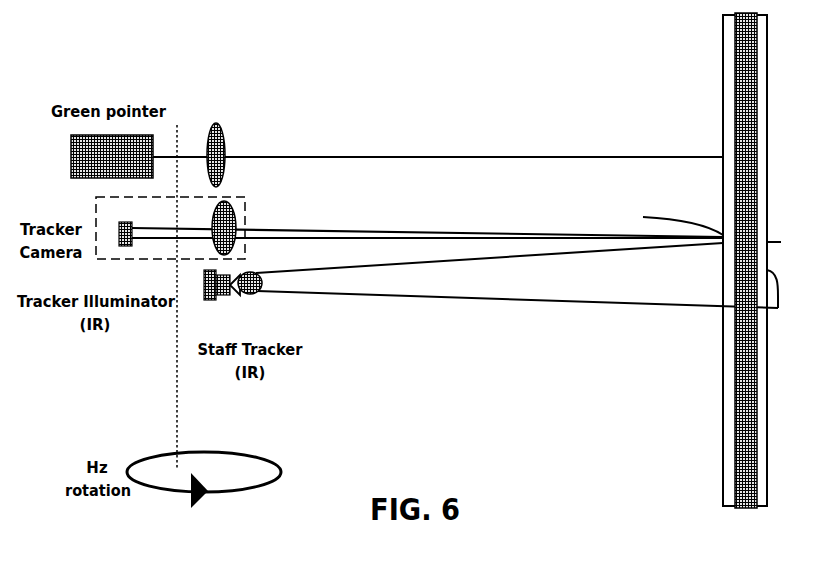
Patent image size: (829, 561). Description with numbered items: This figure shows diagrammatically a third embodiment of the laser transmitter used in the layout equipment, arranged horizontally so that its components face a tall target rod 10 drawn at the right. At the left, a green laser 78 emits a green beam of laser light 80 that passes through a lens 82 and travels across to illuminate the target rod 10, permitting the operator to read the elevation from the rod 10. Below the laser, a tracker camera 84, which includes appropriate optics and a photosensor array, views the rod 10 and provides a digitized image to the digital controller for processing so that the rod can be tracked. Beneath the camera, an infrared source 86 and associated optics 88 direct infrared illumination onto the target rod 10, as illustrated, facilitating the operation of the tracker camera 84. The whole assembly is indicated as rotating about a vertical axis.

The target rod 10 is at (698, 92).
The green laser 78 is at (153, 135).
The green beam of laser light 80 is at (437, 157).
The lens 82 is at (225, 145).
The tracker camera 84 is at (245, 207).
The infrared source 86 is at (218, 300).
The optics 88 is at (250, 294).